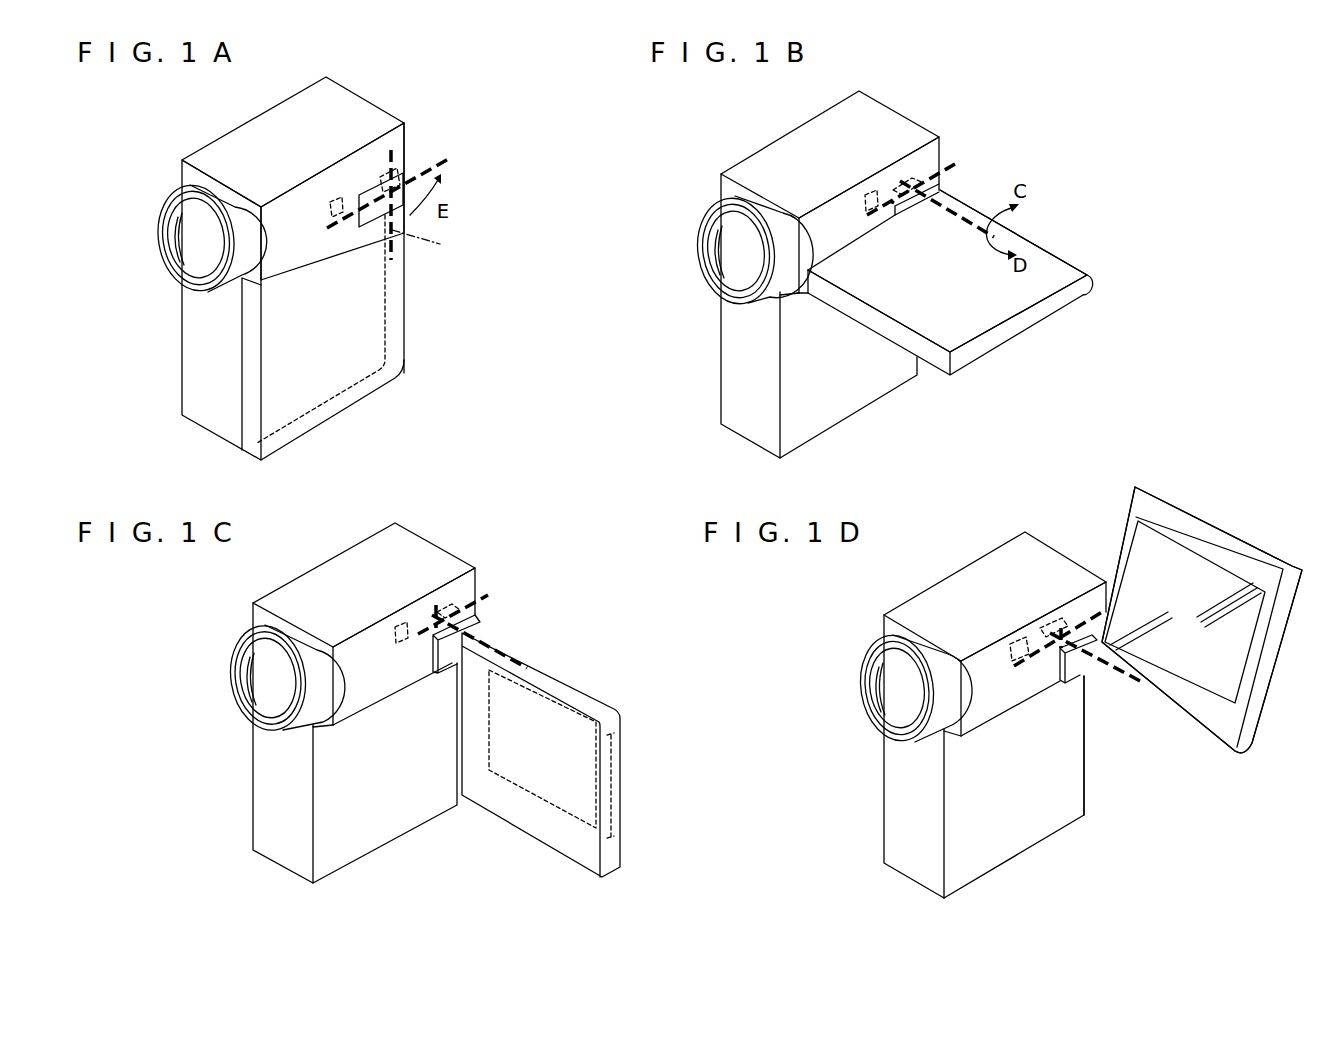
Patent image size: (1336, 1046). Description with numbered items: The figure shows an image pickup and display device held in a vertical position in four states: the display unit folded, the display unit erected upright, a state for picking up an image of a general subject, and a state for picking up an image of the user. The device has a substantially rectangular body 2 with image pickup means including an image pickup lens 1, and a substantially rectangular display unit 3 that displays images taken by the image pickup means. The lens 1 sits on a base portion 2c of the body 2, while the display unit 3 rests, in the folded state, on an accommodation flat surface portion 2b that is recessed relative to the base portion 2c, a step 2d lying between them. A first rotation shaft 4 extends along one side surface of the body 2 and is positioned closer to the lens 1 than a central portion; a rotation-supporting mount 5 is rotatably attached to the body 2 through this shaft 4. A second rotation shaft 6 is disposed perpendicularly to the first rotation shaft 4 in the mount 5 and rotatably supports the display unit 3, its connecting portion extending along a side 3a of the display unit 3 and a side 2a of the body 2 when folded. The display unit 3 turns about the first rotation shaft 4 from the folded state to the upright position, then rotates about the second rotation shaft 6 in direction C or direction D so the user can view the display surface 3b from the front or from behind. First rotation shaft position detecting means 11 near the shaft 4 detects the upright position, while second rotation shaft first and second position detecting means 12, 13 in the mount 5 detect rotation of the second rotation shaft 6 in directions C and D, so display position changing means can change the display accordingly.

In FIG. 1A, the image pickup lens 1 is at (193, 252).
In FIG. 1B, the image pickup lens 1 is at (733, 252).
In FIG. 1C, the image pickup lens 1 is at (265, 688).
In FIG. 1D, the image pickup lens 1 is at (894, 698).
In FIG. 1A, the body 2 is at (164, 353).
In FIG. 1B, the body 2 is at (717, 386).
In FIG. 1C, the body 2 is at (244, 816).
In FIG. 1D, the body 2 is at (936, 605).
In FIG. 1A, the side of the body 2a is at (390, 278).
In FIG. 1D, the side of the body 2a is at (1086, 784).
In FIG. 1B, the accommodation flat surface portion 2b is at (852, 396).
In FIG. 1C, the accommodation flat surface portion 2b is at (362, 830).
In FIG. 1D, the accommodation flat surface portion 2b is at (957, 733).
In FIG. 1A, the base portion 2c is at (302, 248).
In FIG. 1B, the base portion 2c is at (832, 243).
In FIG. 1C, the base portion 2c is at (347, 700).
In FIG. 1D, the base portion 2c is at (985, 729).
In FIG. 1B, the step 2d is at (791, 298).
In FIG. 1C, the step 2d is at (323, 720).
In FIG. 1A, the display unit 3 is at (318, 382).
In FIG. 1B, the display unit 3 is at (1017, 330).
In FIG. 1C, the display unit 3 is at (538, 827).
In FIG. 1D, the display unit 3 is at (1200, 520).
In FIG. 1A, the side of the display unit 3a is at (405, 350).
In FIG. 1B, the side of the display unit 3a is at (1053, 248).
In FIG. 1C, the side of the display unit 3a is at (600, 695).
In FIG. 1C, the display surface 3b is at (619, 787).
In FIG. 1D, the display surface 3b is at (1200, 682).
In FIG. 1A, the first rotation shaft 4 is at (452, 157).
In FIG. 1B, the first rotation shaft 4 is at (955, 164).
In FIG. 1C, the first rotation shaft 4 is at (488, 595).
In FIG. 1D, the first rotation shaft 4 is at (1029, 661).
In FIG. 1A, the rotation-supporting mount 5 is at (368, 215).
In FIG. 1B, the rotation-supporting mount 5 is at (939, 186).
In FIG. 1C, the rotation-supporting mount 5 is at (443, 657).
In FIG. 1D, the rotation-supporting mount 5 is at (1072, 685).
In FIG. 1A, the second rotation shaft 6 is at (425, 243).
In FIG. 1B, the second rotation shaft 6 is at (965, 222).
In FIG. 1C, the second rotation shaft 6 is at (503, 648).
In FIG. 1D, the second rotation shaft 6 is at (1110, 680).
In FIG. 1A, the first rotation shaft position detecting means 11 is at (330, 202).
In FIG. 1B, the first rotation shaft position detecting means 11 is at (865, 197).
In FIG. 1C, the first rotation shaft position detecting means 11 is at (397, 630).
In FIG. 1D, the first rotation shaft position detecting means 11 is at (1012, 645).
In FIG. 1A, the second rotation shaft first position detecting means 12 is at (390, 198).
In FIG. 1B, the second rotation shaft first position detecting means 12 is at (892, 201).
In FIG. 1C, the second rotation shaft first position detecting means 12 is at (437, 605).
In FIG. 1D, the second rotation shaft first position detecting means 12 is at (1047, 630).
In FIG. 1A, the second rotation shaft second position detecting means 13 is at (400, 178).
In FIG. 1B, the second rotation shaft second position detecting means 13 is at (920, 178).
In FIG. 1C, the second rotation shaft second position detecting means 13 is at (458, 610).
In FIG. 1D, the second rotation shaft second position detecting means 13 is at (1053, 620).